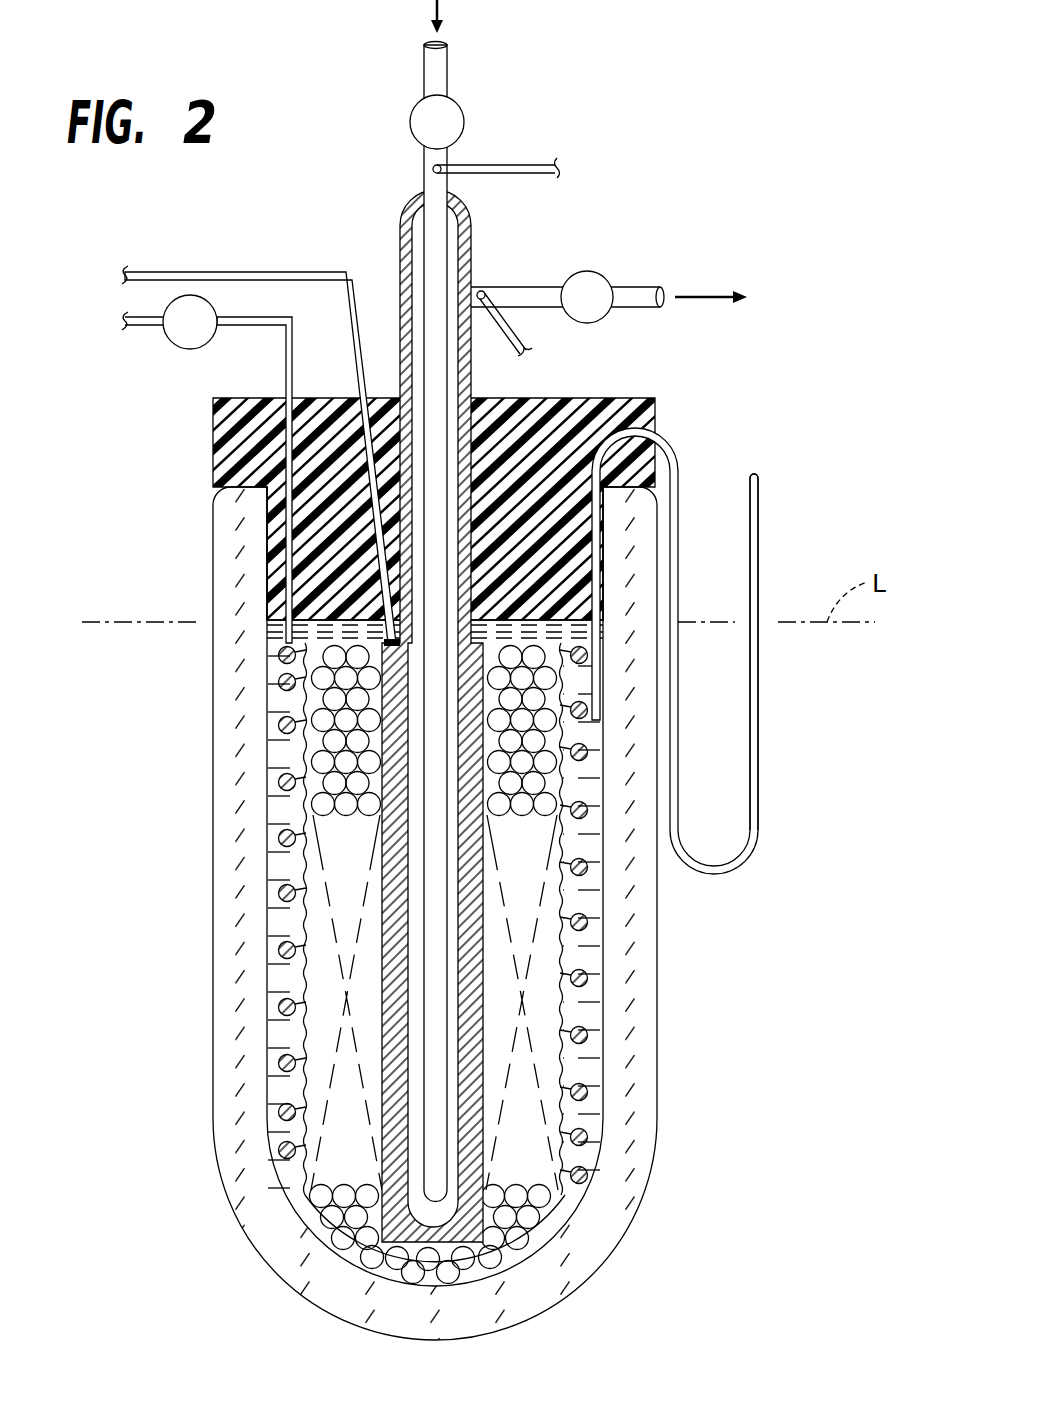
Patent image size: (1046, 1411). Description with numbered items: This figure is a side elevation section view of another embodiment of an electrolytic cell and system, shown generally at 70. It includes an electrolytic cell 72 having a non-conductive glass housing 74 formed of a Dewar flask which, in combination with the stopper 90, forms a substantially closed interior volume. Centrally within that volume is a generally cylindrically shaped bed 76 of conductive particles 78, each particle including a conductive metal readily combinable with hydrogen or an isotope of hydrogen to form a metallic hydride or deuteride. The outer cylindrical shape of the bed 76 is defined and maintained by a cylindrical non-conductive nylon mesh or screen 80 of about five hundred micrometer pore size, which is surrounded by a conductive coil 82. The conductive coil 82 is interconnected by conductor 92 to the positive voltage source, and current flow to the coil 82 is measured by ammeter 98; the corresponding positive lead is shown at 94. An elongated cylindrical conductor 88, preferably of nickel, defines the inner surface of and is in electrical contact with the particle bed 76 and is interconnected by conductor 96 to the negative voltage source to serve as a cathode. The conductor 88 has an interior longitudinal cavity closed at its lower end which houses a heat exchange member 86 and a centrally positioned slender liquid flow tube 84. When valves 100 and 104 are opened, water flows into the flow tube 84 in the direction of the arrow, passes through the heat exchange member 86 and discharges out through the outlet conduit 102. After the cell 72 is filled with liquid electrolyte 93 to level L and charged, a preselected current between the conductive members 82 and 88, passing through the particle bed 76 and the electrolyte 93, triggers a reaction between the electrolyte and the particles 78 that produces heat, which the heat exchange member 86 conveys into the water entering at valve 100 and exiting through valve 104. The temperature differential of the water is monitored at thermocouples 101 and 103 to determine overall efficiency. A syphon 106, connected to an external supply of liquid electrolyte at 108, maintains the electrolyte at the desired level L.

The electrolytic cell and system 70 is at (350, 670).
The electrolytic cell 72 is at (373, 913).
The non-conductive glass housing 74 is at (213, 933).
The bed of conductive particles 76 is at (343, 952).
The conductive particles 78 is at (560, 1192).
The nylon mesh or screen 80 is at (595, 1072).
The conductive coil 82 is at (582, 977).
The liquid flow tube 84 is at (428, 1188).
The heat exchange member 86 is at (383, 1082).
The elongated cylindrical conductor 88 is at (383, 1126).
The stopper 90 is at (625, 398).
The conductor 92 is at (268, 593).
The electrolyte 93 is at (280, 707).
The positive lead 94 is at (147, 330).
The conductor 96 is at (160, 270).
The ammeter 98 is at (197, 348).
The valve 100 is at (466, 121).
The thermocouple 101 is at (522, 168).
The outlet conduit 102 is at (508, 287).
The thermocouple 103 is at (532, 333).
The valve 104 is at (600, 272).
The syphon 106 is at (680, 487).
The external supply of liquid electrolyte 108 is at (762, 487).